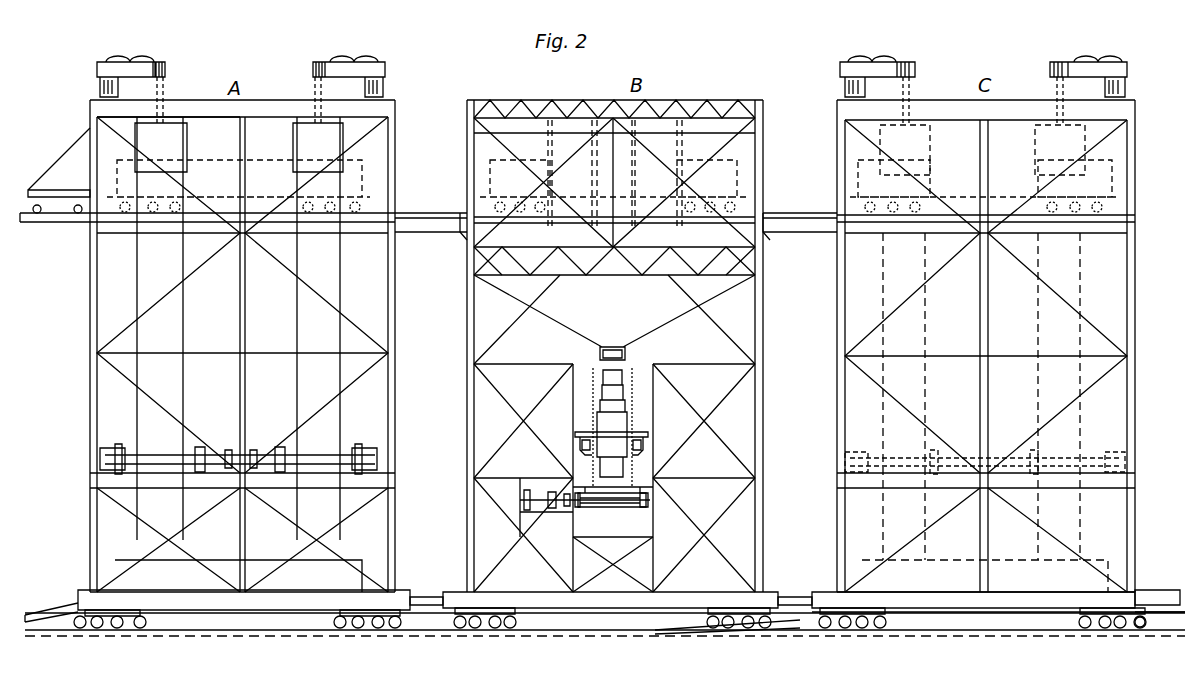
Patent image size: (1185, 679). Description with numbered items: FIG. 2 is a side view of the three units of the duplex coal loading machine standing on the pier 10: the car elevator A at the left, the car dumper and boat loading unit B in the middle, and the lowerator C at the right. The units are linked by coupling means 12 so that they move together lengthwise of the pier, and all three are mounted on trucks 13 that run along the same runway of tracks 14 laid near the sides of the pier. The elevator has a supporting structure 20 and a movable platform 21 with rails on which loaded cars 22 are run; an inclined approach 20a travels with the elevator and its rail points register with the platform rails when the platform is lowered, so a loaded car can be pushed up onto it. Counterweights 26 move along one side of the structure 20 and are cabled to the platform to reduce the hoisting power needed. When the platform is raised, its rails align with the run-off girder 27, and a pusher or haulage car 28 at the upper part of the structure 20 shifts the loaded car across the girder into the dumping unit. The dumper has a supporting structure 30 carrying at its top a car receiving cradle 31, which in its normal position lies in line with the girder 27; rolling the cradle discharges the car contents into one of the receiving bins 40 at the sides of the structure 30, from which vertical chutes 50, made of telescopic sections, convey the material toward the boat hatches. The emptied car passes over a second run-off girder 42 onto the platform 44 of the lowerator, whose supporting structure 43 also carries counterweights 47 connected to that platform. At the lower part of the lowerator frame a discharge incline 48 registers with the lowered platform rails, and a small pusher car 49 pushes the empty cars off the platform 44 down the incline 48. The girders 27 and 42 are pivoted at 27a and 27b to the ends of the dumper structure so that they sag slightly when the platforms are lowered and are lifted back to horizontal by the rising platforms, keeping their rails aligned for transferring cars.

The pier 10 is at (946, 633).
The coupling means 12 is at (430, 596).
The trucks 13 is at (340, 630).
The tracks 14 is at (1033, 636).
The supporting structure 20 is at (90, 405).
The inclined approach 20a is at (54, 615).
The movable platform 21 is at (126, 232).
The loaded cars 22 is at (335, 558).
The counterweights 26 is at (185, 148).
The run-off girder 27 is at (434, 236).
The pivot 27a is at (462, 214).
The pivot 27b is at (768, 216).
The pusher or haulage car 28 is at (70, 187).
The supporting structure 30 is at (467, 403).
The car receiving cradle 31 is at (548, 150).
The receiving bins 40 is at (614, 317).
The run-off girder 42 is at (813, 236).
The supporting structure 43 is at (1140, 412).
The platform 44 is at (1122, 232).
The counterweights 47 is at (937, 148).
The discharge incline 48 is at (795, 630).
The pusher car 49 is at (1156, 592).
The vertical chutes 50 is at (620, 423).